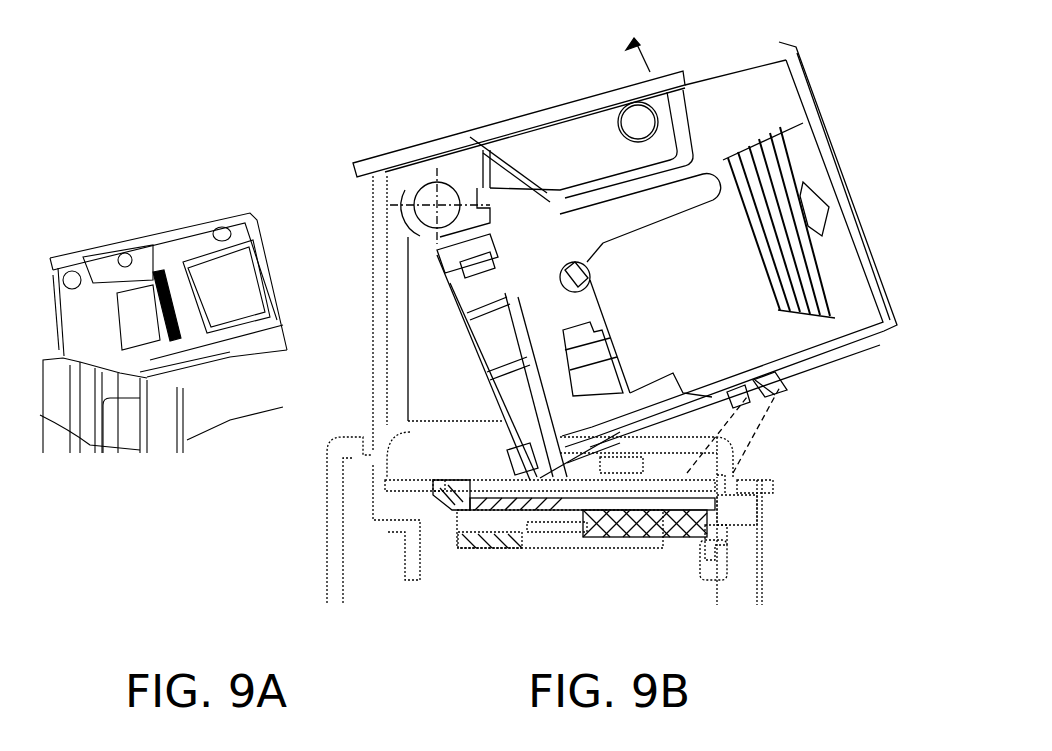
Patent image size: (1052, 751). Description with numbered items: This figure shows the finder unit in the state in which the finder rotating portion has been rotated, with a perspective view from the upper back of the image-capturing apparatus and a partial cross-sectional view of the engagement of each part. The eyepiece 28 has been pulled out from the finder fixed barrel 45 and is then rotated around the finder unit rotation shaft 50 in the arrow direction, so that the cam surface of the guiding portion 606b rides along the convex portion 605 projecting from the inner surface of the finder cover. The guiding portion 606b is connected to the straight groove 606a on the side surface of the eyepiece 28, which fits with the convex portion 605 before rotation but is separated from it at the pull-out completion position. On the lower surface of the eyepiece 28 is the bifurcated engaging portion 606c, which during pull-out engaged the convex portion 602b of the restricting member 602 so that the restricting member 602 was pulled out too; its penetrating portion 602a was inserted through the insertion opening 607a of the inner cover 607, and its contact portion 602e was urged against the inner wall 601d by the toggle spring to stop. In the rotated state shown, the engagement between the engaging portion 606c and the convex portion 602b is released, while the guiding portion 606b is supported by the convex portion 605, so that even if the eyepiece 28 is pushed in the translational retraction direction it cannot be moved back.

The finder unit rotation shaft 50 is at (443, 185).
The straight groove 606a is at (688, 195).
The eyepiece 28 is at (663, 250).
The guiding portion 606b is at (580, 260).
The convex portion 605 is at (557, 281).
The finder fixed barrel 45 is at (573, 400).
The engaging portion 606c is at (745, 398).
The inner cover 607 is at (733, 483).
The convex portion 602b is at (720, 502).
The insertion opening 607a is at (748, 520).
The penetrating portion 602a is at (740, 513).
The restricting member 602 is at (587, 527).
The contact portion 602e is at (700, 505).
The inner wall 601d is at (710, 525).